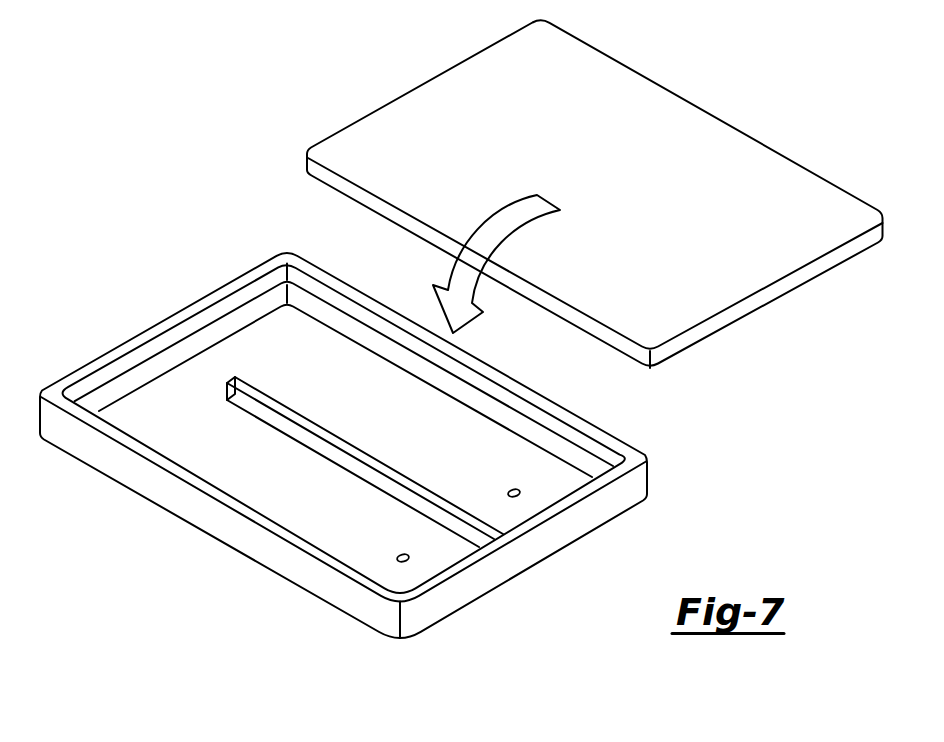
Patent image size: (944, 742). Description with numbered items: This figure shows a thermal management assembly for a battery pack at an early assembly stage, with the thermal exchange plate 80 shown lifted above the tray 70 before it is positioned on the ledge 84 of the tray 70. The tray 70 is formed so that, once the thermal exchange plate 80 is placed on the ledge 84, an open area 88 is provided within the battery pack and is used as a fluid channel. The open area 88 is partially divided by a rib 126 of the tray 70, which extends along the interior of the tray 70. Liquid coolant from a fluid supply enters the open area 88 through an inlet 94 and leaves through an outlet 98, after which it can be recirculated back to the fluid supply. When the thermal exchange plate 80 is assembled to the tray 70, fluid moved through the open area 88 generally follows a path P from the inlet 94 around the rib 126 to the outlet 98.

The tray 70 is at (276, 260).
The thermal exchange plate 80 is at (440, 95).
The ledge 84 is at (227, 316).
The open area 88 is at (333, 527).
The inlet 94 is at (398, 557).
The outlet 98 is at (508, 491).
The rib 126 is at (373, 460).
The path P is at (313, 378).